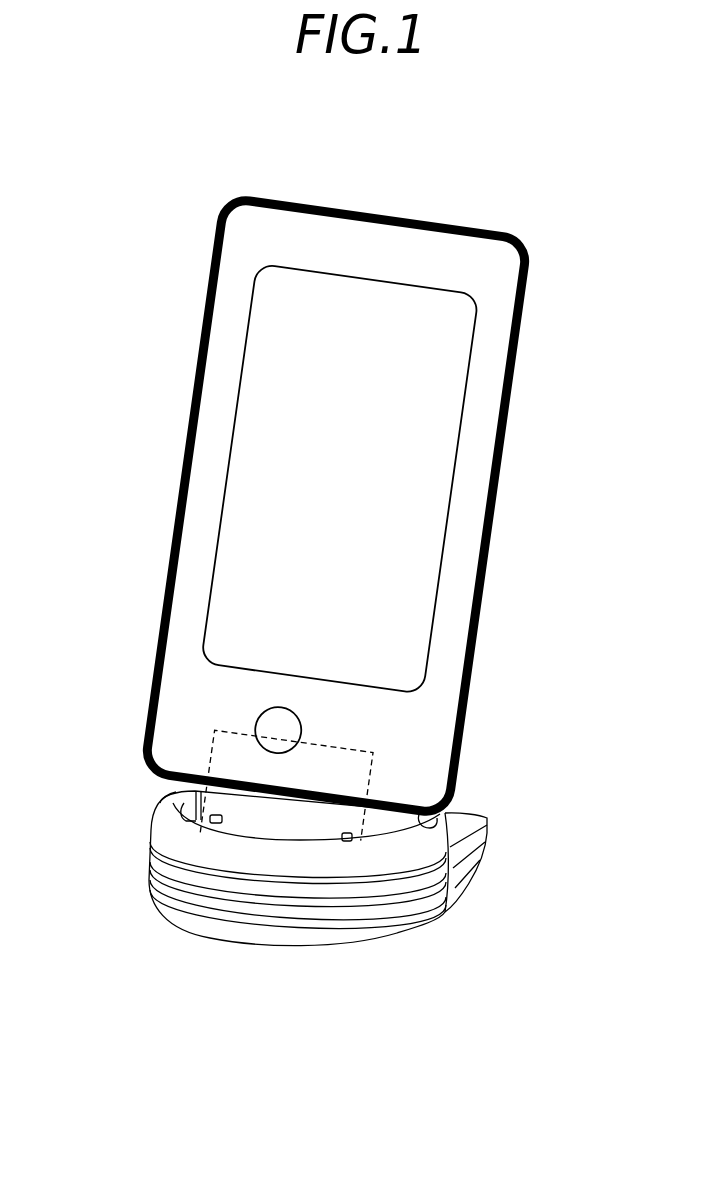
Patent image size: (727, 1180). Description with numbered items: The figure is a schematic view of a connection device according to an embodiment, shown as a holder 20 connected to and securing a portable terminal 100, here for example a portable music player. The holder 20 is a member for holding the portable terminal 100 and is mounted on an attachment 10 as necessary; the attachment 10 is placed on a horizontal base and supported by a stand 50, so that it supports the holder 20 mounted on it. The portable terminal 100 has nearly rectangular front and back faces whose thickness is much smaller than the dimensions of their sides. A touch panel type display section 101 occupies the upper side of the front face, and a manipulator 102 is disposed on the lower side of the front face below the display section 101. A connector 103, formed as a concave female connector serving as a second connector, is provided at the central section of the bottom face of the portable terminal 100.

The portable terminal 100 is at (500, 393).
The display section 101 is at (277, 483).
The manipulator 102 is at (277, 727).
The connector 103 is at (373, 767).
The attachment 10 is at (447, 926).
The holder 20 is at (253, 812).
The stand 50 is at (487, 847).